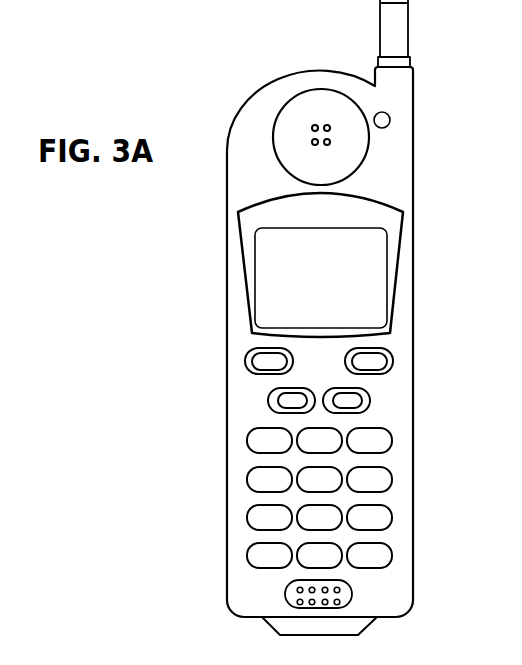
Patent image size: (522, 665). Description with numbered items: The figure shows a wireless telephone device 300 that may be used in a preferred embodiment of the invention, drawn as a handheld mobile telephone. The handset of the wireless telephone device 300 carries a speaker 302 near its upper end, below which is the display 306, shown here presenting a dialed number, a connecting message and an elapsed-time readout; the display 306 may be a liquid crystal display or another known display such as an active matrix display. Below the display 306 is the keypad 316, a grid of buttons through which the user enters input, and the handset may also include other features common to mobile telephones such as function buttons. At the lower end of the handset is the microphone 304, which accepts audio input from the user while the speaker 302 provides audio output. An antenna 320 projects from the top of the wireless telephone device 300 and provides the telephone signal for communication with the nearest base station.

The wireless telephone device 300 is at (227, 353).
The speaker 302 is at (297, 93).
The microphone 304 is at (345, 603).
The display 306 is at (255, 252).
The keypad 316 is at (210, 430).
The antenna 320 is at (380, 28).